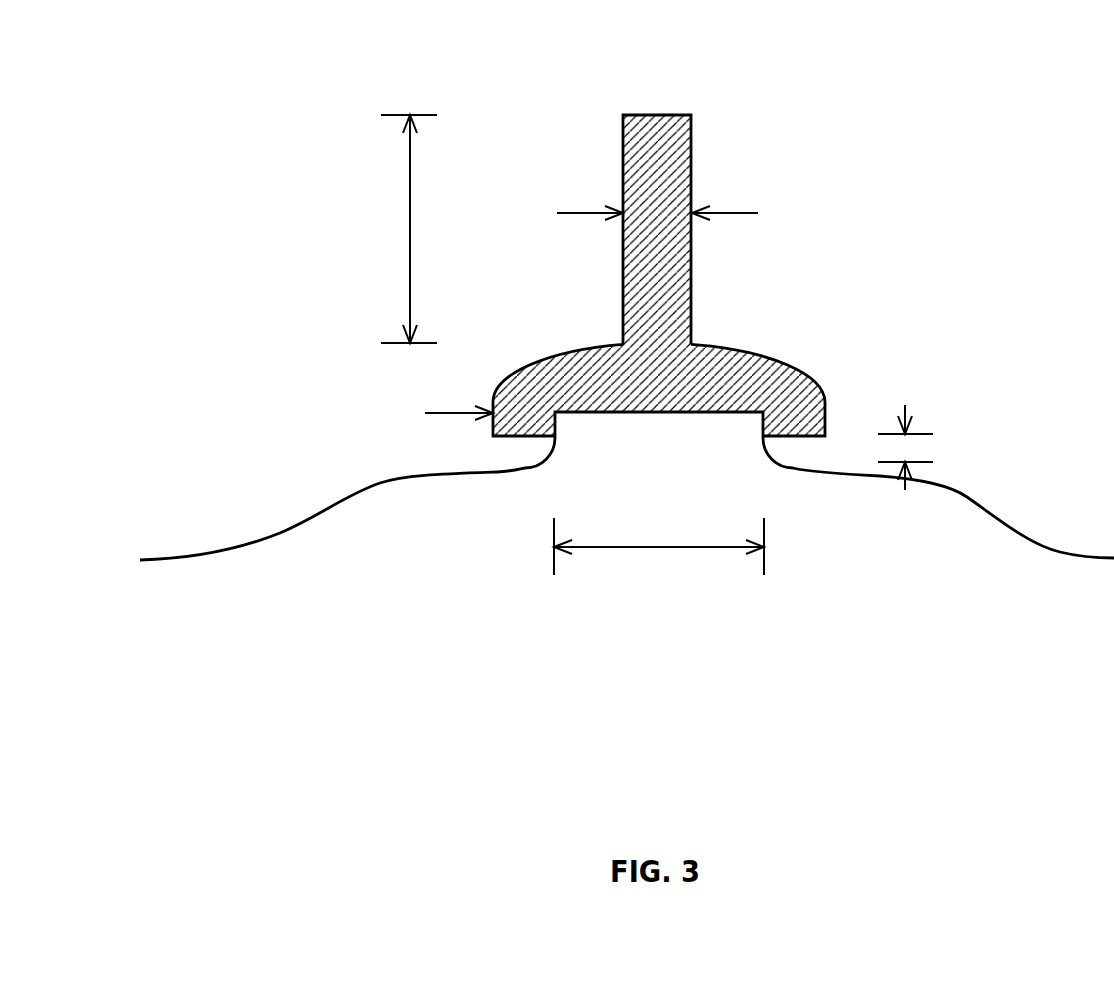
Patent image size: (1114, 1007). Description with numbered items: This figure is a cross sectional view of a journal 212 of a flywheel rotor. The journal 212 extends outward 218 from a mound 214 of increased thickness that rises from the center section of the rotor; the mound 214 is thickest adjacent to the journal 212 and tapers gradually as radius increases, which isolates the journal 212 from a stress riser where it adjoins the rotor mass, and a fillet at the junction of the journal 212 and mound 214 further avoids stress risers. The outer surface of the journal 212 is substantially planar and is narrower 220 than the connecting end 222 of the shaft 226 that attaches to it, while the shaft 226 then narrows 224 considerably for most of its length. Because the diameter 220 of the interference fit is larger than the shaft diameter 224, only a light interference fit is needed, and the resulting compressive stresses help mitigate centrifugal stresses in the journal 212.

The journal 212 is at (676, 435).
The mound 214 is at (965, 497).
The outward extension of the journal 218 is at (995, 449).
The diameter of the journal outer surface 220 is at (668, 660).
The connecting end of the shaft 222 is at (388, 412).
The shaft diameter 224 is at (868, 213).
The shaft 226 is at (653, 127).